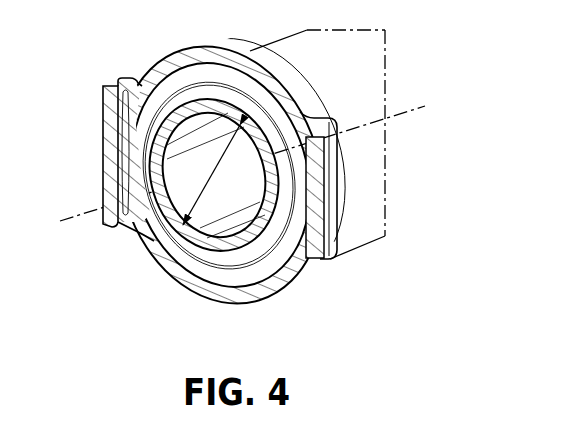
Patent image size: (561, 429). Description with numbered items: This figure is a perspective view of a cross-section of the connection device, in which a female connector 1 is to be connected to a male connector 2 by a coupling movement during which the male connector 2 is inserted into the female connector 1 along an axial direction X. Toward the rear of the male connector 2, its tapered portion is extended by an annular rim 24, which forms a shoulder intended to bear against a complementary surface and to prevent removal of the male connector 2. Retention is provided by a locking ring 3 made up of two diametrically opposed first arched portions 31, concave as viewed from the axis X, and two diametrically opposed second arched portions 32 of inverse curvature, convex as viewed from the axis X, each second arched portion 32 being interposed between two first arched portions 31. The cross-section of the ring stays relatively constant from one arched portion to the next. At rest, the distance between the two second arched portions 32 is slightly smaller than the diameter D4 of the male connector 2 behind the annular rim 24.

The female connector 1 is at (343, 187).
The male connector 2 is at (200, 211).
The locking ring 3 is at (314, 262).
The annular rim 24 is at (172, 105).
The first arched portions 31 is at (198, 297).
The second arched portions 32 is at (137, 157).
The diameter of the second intermediate portion D4 is at (208, 175).
The axial direction X is at (74, 214).